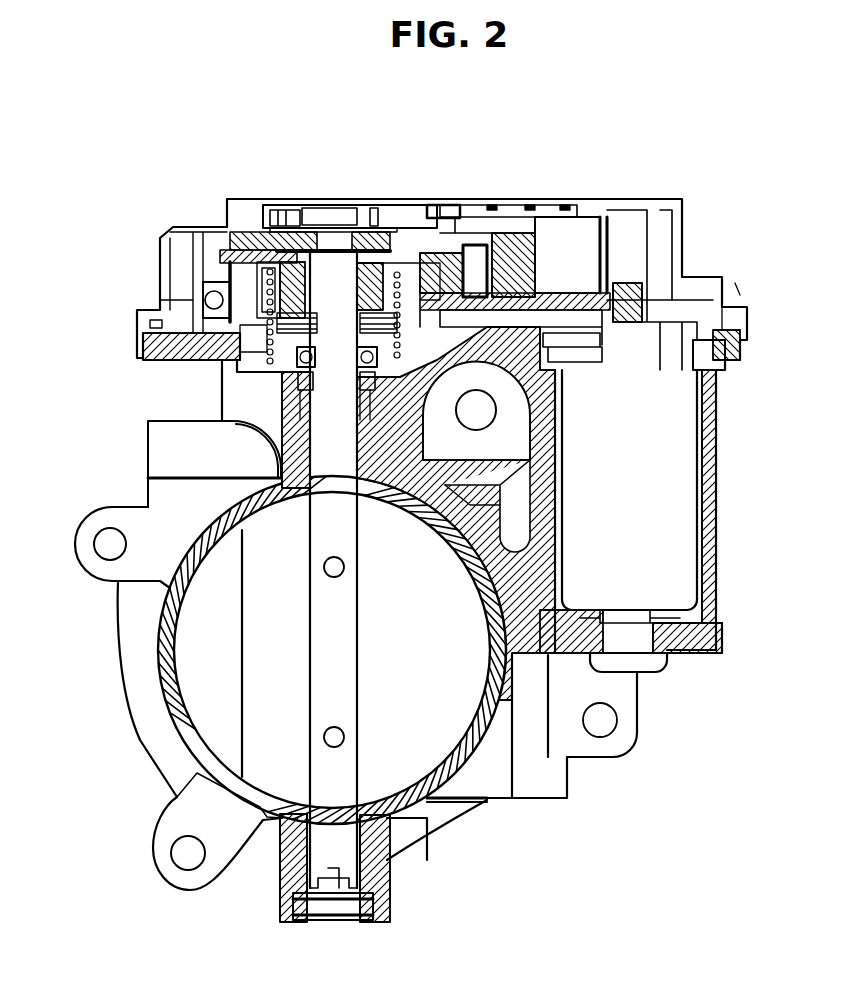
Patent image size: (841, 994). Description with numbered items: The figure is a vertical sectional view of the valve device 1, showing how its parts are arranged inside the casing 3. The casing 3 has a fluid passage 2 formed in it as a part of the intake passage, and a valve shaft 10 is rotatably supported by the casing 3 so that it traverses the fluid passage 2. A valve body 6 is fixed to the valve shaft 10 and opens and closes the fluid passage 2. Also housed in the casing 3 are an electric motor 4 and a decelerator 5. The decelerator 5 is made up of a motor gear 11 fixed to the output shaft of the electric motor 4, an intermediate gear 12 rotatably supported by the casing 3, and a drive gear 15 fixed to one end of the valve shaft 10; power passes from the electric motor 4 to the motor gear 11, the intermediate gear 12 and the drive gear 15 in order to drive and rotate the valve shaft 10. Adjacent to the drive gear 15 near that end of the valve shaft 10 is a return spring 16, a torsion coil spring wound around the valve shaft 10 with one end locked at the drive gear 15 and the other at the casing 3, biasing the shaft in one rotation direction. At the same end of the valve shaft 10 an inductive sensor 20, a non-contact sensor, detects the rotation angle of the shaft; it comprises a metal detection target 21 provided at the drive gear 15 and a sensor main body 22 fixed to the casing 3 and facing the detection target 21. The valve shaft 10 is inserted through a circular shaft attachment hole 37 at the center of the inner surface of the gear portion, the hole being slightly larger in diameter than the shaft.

The valve device 1 is at (763, 190).
The fluid passage 2 is at (205, 672).
The casing 3 is at (150, 553).
The electric motor 4 is at (657, 547).
The decelerator 5 is at (548, 233).
The valve body 6 is at (283, 741).
The valve shaft 10 is at (340, 852).
The motor gear 11 is at (628, 288).
The intermediate gear 12 is at (512, 252).
The drive gear 15 is at (472, 250).
The return spring 16 is at (262, 346).
The inductive sensor 20 is at (350, 165).
The detection target 21 is at (287, 148).
The sensor main body 22 is at (326, 214).
The shaft attachment hole 37 is at (300, 242).